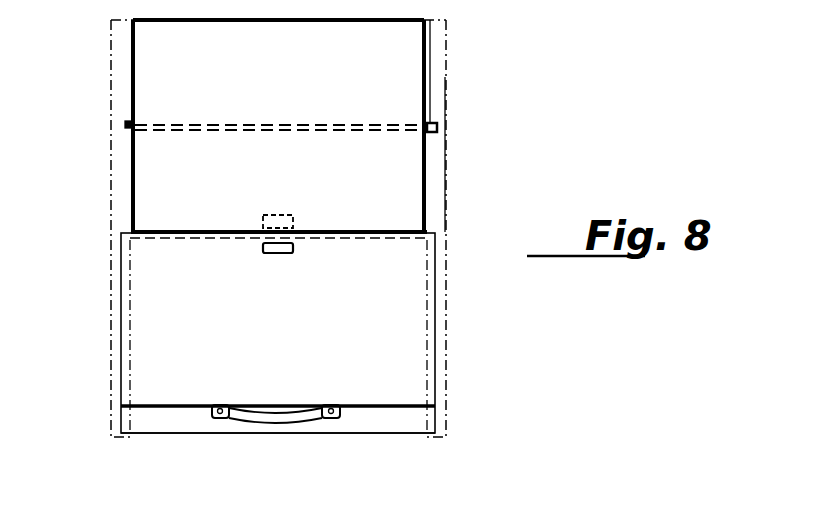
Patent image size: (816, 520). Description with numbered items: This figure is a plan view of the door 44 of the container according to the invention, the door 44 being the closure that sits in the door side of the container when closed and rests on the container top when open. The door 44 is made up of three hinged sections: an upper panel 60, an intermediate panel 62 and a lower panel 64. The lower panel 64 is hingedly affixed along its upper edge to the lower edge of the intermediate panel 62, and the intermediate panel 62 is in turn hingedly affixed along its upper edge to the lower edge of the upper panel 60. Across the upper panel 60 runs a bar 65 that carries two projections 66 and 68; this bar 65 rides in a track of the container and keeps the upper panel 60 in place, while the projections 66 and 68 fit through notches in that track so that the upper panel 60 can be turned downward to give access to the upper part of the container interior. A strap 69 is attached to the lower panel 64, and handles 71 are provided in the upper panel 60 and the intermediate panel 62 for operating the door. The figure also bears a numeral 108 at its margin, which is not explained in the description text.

The door 44 is at (478, 78).
The upper panel 60 is at (393, 200).
The intermediate panel 62 is at (393, 338).
The lower panel 64 is at (377, 420).
The bar 65 is at (400, 126).
The projection 66 is at (127, 126).
The projection 68 is at (435, 128).
The strap 69 is at (270, 421).
The handles 71 is at (277, 214).
The support member 108 is at (722, 519).